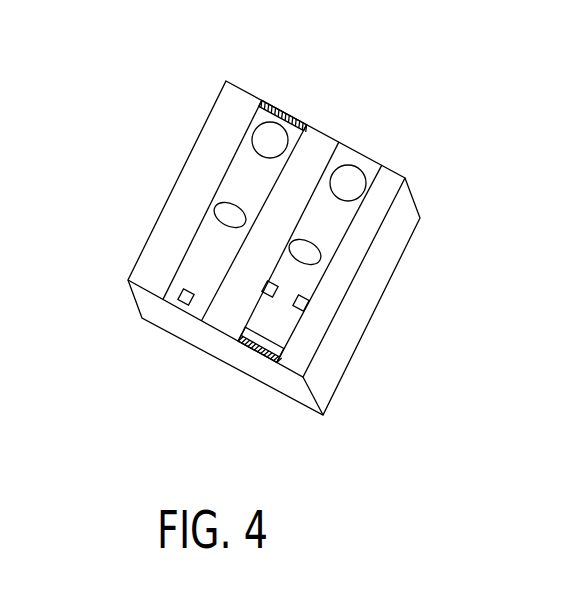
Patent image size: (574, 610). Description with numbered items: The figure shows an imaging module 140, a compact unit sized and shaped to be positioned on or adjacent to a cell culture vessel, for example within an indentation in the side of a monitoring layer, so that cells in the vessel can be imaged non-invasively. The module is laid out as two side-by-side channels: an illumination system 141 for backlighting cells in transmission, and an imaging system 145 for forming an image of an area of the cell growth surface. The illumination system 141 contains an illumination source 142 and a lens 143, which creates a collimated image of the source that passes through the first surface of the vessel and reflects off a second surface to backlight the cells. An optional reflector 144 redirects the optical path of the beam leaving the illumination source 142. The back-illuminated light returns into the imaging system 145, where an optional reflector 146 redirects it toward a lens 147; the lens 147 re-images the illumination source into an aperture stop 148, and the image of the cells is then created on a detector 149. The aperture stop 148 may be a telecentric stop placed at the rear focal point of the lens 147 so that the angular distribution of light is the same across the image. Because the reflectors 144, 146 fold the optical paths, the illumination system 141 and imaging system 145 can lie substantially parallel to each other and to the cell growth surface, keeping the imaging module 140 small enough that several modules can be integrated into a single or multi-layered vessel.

The imaging module 140 is at (140, 122).
The illumination system 141 is at (176, 257).
The illumination source 142 is at (181, 308).
The lens 143 is at (216, 207).
The reflector 144 is at (268, 121).
The imaging system 145 is at (362, 212).
The reflector 146 is at (350, 165).
The lens 147 is at (323, 256).
The aperture stop 148 is at (293, 298).
The detector 149 is at (280, 341).